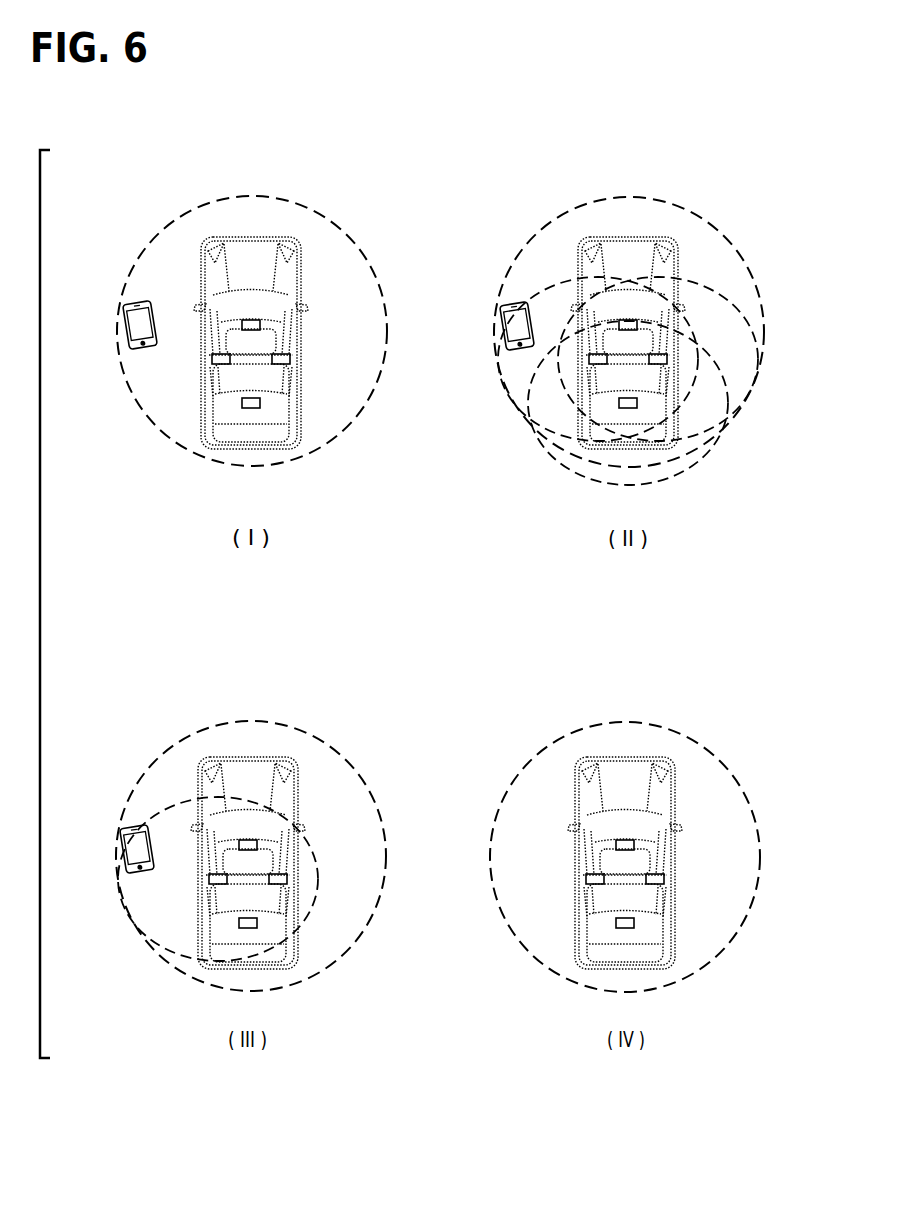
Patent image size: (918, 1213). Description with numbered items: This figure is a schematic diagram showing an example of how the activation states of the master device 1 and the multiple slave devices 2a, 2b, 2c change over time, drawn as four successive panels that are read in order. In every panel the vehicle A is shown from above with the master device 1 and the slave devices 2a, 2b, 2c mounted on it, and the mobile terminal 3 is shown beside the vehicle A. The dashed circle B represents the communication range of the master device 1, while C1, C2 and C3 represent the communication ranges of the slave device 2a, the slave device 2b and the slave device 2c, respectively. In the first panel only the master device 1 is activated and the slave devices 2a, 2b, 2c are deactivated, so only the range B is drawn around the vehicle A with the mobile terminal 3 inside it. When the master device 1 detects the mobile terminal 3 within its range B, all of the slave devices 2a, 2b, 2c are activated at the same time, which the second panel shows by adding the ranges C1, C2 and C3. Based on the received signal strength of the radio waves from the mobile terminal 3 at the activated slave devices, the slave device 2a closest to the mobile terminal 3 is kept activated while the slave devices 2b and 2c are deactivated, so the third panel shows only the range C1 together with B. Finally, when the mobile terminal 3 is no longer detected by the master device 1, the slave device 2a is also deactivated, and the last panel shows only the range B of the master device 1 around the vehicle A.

The master device 1 is at (251, 320).
The slave device 2a is at (212, 358).
The slave device 2b is at (290, 358).
The slave device 2c is at (260, 402).
The mobile terminal 3 is at (126, 325).
The vehicle A is at (294, 240).
The communication range B is at (372, 247).
The communication range C1 is at (550, 276).
The communication range C2 is at (742, 304).
The communication range C3 is at (705, 462).